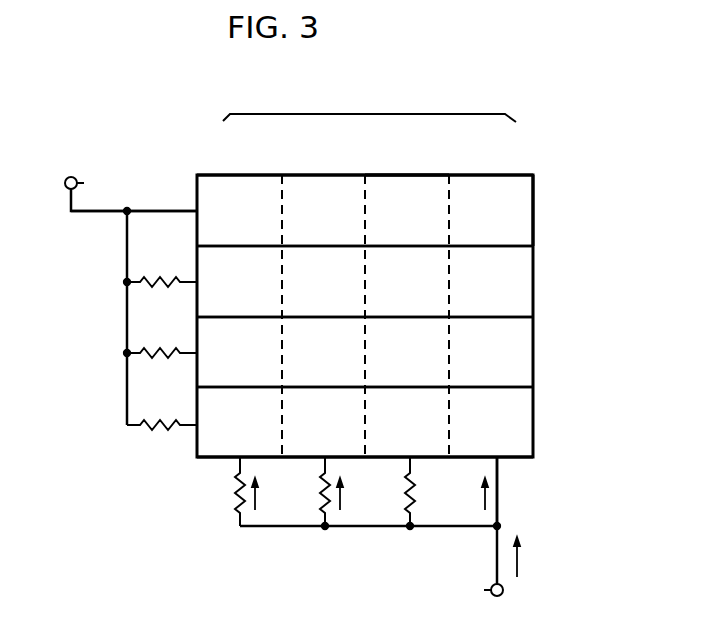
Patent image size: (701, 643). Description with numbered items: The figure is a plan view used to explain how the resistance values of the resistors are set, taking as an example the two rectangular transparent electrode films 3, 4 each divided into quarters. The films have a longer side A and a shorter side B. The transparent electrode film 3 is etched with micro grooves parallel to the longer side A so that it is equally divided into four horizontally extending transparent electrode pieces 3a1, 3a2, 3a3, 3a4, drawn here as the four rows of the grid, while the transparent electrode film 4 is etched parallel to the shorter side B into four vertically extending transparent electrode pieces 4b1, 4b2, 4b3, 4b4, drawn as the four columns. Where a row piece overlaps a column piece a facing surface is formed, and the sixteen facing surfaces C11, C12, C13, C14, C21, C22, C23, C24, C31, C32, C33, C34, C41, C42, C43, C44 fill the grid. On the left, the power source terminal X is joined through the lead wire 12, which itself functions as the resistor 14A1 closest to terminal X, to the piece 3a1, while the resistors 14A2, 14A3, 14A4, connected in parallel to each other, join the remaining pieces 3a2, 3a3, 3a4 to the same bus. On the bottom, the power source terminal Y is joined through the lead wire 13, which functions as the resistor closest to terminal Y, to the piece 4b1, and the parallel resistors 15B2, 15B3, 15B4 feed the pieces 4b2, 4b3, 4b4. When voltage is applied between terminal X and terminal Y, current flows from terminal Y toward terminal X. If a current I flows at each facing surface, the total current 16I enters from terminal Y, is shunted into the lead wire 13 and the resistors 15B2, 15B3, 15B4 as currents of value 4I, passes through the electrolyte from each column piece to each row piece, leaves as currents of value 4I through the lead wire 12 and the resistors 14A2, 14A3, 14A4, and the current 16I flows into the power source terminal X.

The transparent electrode film 3 is at (612, 445).
The transparent electrode film 4 is at (369, 101).
The transparent electrode piece 4b1 is at (488, 174).
The transparent electrode piece 4b2 is at (423, 174).
The transparent electrode piece 4b3 is at (311, 174).
The transparent electrode piece 4b4 is at (238, 173).
The longer side A is at (353, 174).
The shorter side B is at (534, 253).
The transparent electrode piece 3a1 is at (533, 212).
The transparent electrode piece 3a2 is at (533, 287).
The transparent electrode piece 3a3 is at (533, 350).
The transparent electrode piece 3a4 is at (533, 420).
The power source terminal X is at (64, 179).
The power source terminal Y is at (503, 592).
The lead wire 12 is at (134, 176).
The resistor 14A1 is at (140, 211).
The resistor 14A2 is at (126, 282).
The resistor 14A3 is at (126, 353).
The resistor 14A4 is at (128, 425).
The lead wire 13 is at (499, 482).
The resistor 15B2 is at (410, 504).
The resistor 15B3 is at (323, 504).
The resistor 15B4 is at (238, 502).
The shunted current value 4I is at (258, 492).
The total current value 16I is at (520, 557).
The facing surface C11 is at (239, 212).
The facing surface C12 is at (323, 212).
The facing surface C13 is at (407, 212).
The facing surface C14 is at (490, 212).
The facing surface C21 is at (239, 283).
The facing surface C22 is at (323, 283).
The facing surface C23 is at (407, 283).
The facing surface C24 is at (490, 283).
The facing surface C31 is at (239, 354).
The facing surface C32 is at (323, 354).
The facing surface C33 is at (407, 354).
The facing surface C34 is at (490, 354).
The facing surface C41 is at (239, 424).
The facing surface C42 is at (323, 424).
The facing surface C43 is at (407, 424).
The facing surface C44 is at (490, 424).